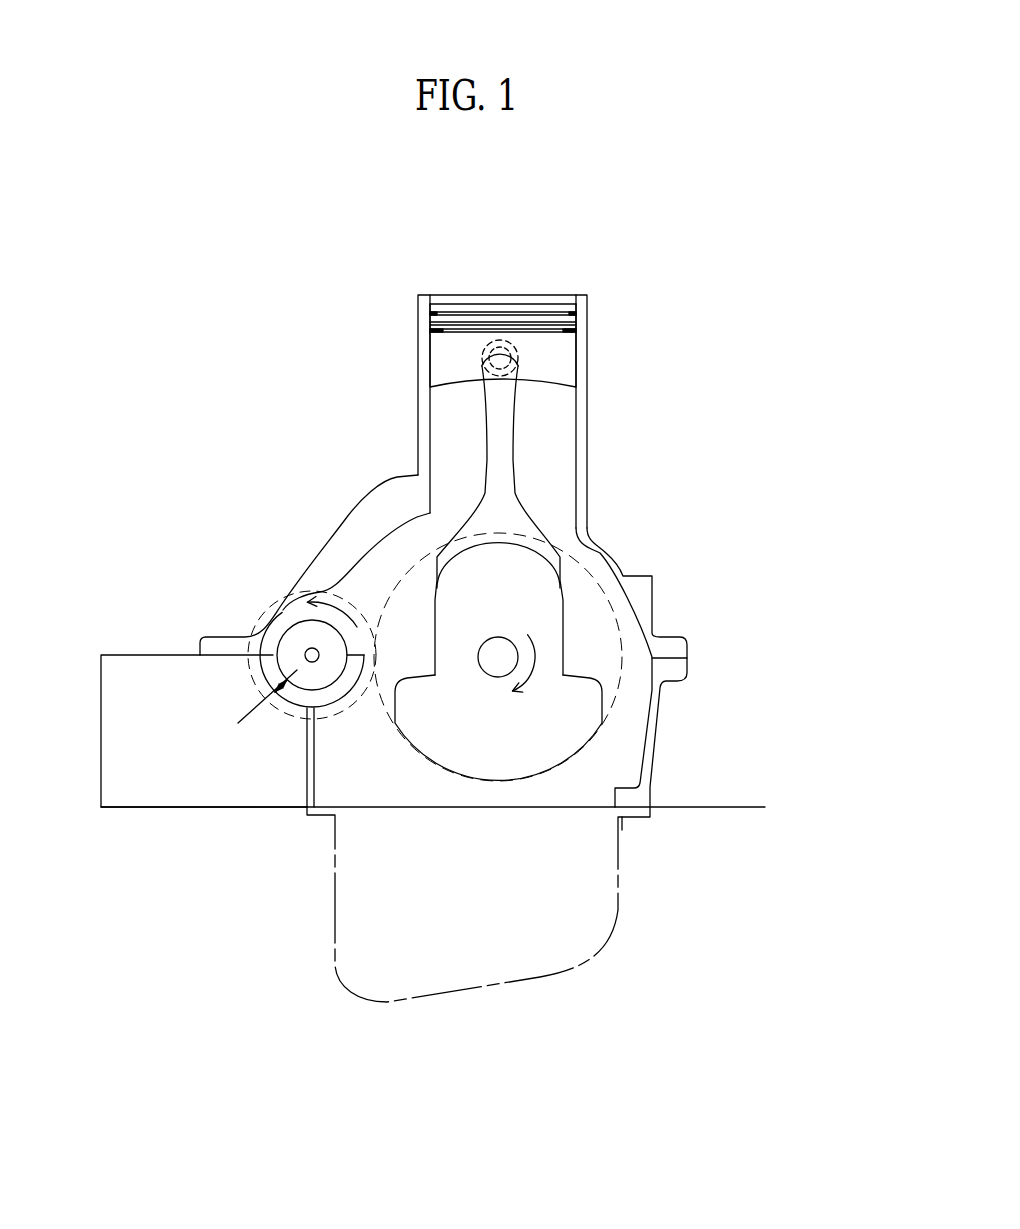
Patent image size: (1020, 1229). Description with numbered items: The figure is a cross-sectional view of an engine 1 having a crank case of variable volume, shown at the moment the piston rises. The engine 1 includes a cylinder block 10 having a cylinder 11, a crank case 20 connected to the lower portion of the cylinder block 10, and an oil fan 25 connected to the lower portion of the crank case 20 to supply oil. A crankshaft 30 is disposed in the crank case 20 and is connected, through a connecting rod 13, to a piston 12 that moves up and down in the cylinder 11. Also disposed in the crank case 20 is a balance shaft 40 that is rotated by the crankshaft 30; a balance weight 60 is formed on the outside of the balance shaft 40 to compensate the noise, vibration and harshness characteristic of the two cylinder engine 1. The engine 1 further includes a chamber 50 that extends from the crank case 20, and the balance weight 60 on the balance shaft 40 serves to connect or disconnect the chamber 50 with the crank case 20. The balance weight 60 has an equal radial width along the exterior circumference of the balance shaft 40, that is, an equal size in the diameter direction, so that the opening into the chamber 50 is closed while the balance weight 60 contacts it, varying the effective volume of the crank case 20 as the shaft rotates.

The engine 1 is at (508, 195).
The cylinder block 10 is at (723, 574).
The cylinder 11 is at (577, 443).
The piston 12 is at (557, 357).
The connecting rod 13 is at (495, 422).
The crank case 20 is at (723, 716).
The oil fan 25 is at (618, 912).
The crankshaft 30 is at (497, 647).
The balance shaft 40 is at (305, 655).
The chamber 50 is at (140, 792).
The balance weight 60 is at (295, 695).